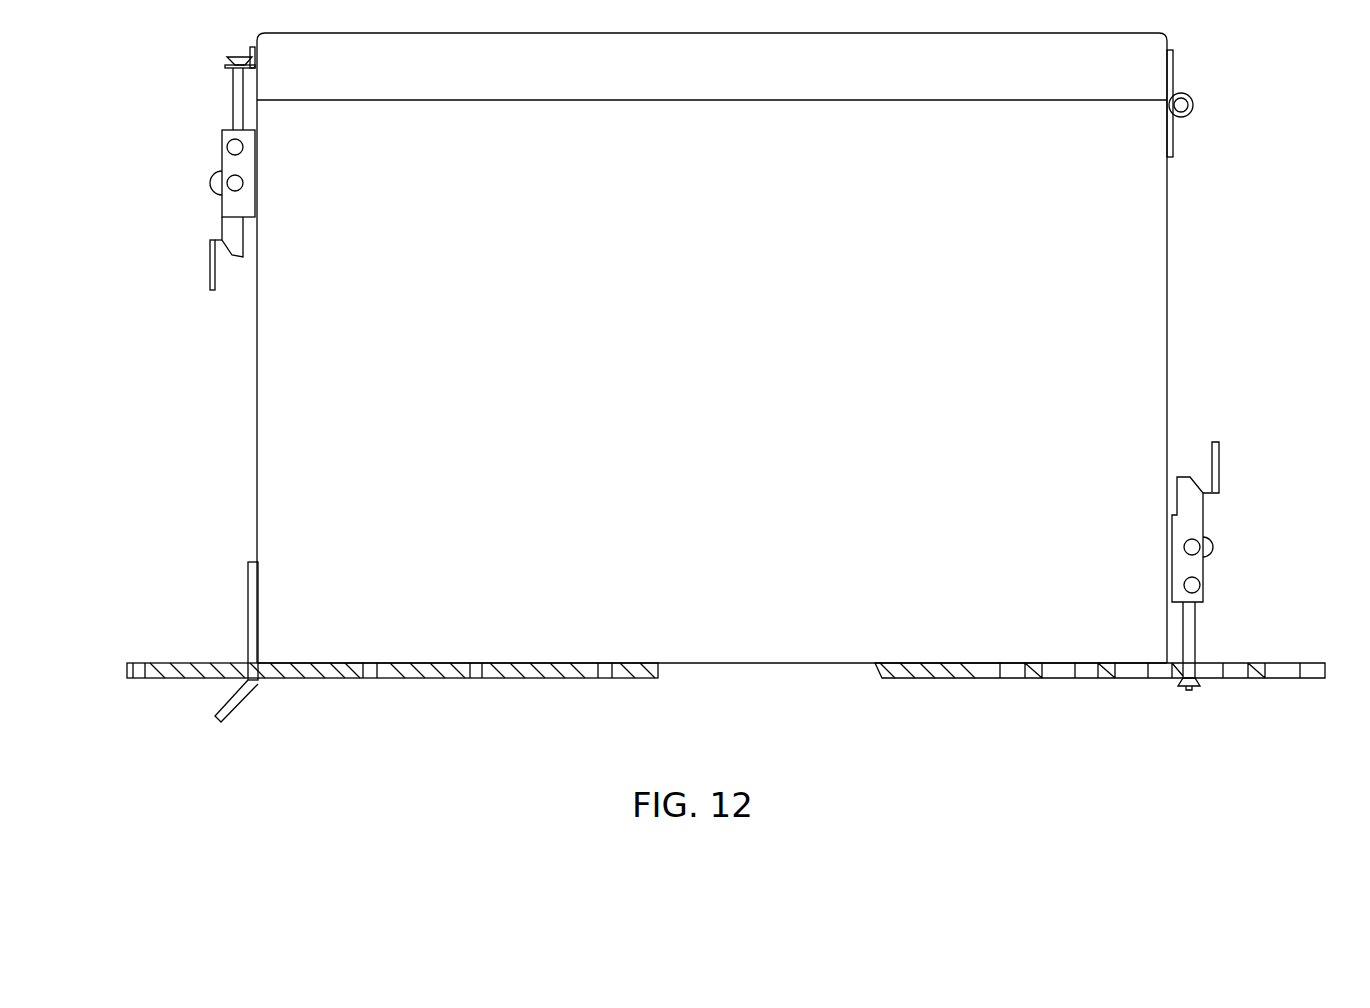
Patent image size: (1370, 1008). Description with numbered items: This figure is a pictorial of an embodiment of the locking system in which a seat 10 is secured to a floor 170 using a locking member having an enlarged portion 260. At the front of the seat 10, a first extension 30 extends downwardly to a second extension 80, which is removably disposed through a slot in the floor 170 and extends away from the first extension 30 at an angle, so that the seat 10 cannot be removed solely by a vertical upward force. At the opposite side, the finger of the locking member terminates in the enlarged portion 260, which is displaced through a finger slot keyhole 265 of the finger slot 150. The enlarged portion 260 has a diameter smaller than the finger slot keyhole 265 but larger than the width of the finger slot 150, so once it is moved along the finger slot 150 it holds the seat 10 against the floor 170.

The seat 10 is at (670, 345).
The first extension 30 is at (247, 605).
The second extension 80 is at (243, 700).
The finger slot 150 is at (1207, 663).
The floor 170 is at (537, 678).
The enlarged portion 260 is at (1187, 690).
The finger slot keyhole 265 is at (1238, 667).